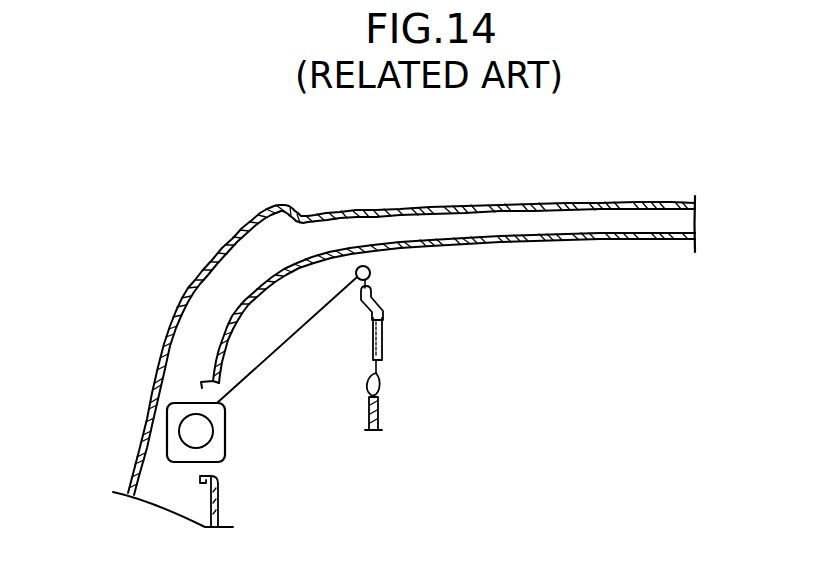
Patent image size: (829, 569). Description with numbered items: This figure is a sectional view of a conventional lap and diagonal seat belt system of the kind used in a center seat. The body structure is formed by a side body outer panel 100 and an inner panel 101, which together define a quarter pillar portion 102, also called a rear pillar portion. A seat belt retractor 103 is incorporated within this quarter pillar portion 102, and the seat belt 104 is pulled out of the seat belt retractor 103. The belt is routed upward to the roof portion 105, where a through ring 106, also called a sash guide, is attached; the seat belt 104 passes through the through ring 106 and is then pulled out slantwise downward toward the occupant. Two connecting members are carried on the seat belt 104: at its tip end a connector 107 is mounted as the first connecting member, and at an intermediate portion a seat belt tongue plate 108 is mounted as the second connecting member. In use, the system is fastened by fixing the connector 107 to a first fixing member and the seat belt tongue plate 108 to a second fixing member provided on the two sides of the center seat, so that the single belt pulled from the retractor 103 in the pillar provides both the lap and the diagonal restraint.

The side body outer panel 100 is at (163, 344).
The inner panel 101 is at (220, 505).
The quarter pillar portion 102 is at (230, 478).
The seat belt retractor 103 is at (167, 438).
The seat belt 104 is at (258, 362).
The roof portion 105 is at (655, 241).
The through ring 106 is at (362, 264).
The connector 107 is at (380, 423).
The seat belt tongue plate 108 is at (385, 355).